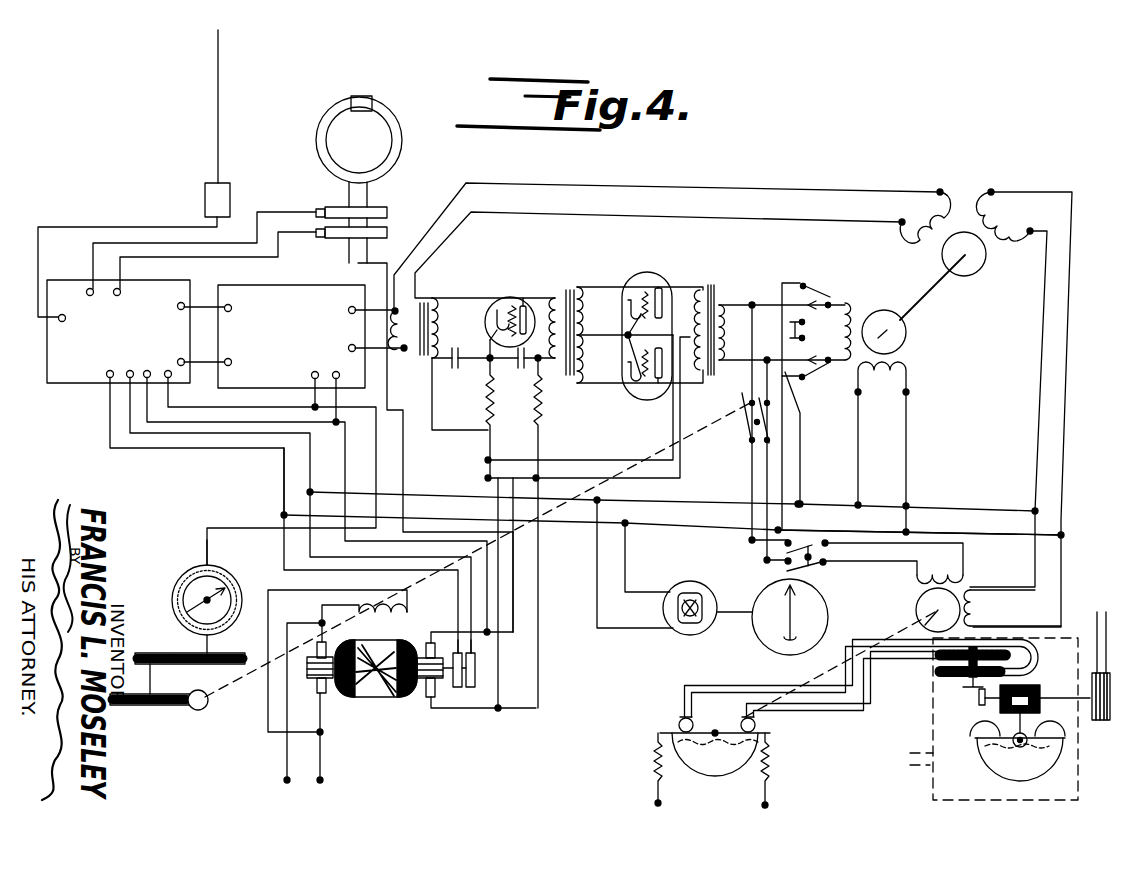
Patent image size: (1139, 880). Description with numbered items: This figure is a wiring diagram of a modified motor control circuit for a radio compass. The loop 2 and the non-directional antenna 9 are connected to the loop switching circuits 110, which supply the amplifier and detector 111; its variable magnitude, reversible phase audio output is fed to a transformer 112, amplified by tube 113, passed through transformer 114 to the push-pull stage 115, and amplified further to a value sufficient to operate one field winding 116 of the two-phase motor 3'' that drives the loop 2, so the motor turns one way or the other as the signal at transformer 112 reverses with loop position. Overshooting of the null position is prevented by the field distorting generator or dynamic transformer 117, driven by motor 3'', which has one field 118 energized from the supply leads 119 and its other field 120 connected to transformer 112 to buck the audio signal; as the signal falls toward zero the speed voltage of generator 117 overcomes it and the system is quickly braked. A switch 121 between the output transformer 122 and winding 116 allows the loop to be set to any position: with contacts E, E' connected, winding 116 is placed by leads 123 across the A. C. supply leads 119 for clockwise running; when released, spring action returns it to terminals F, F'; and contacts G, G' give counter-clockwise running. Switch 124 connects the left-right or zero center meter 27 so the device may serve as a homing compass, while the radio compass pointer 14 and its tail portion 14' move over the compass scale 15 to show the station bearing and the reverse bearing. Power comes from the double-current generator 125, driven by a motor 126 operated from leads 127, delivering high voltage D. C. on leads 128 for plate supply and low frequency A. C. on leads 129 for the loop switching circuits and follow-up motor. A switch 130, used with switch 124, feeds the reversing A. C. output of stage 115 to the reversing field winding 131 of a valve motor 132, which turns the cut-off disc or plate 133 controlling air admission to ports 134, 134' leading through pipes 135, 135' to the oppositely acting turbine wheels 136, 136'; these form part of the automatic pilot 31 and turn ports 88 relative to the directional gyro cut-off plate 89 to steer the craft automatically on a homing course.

The non-directional antenna 9 is at (222, 118).
The loop 2 is at (395, 116).
The loop switching circuits 110 is at (58, 280).
The amplifier and detector 111 is at (298, 290).
The transformer 112 is at (424, 316).
The tube 113 is at (510, 310).
The transformer 114 is at (571, 326).
The push-pull stage 115 is at (647, 326).
The output transformer 122 is at (719, 322).
The switch 121 is at (808, 276).
The contact E is at (813, 275).
The terminal F is at (834, 294).
The contact G is at (809, 322).
The contact E' is at (816, 336).
The terminal F' is at (838, 367).
The contact G' is at (815, 390).
The field winding 116 is at (884, 317).
The field distorting generator or dynamic transformer 117 is at (996, 304).
The two-phase motor 3'' is at (935, 348).
The field 120 is at (919, 217).
The field 118 is at (1010, 215).
The switch 124 is at (743, 434).
The leads 123 is at (782, 455).
The supply leads 119 is at (950, 528).
The leads 129 is at (309, 462).
The leads 128 is at (533, 612).
The compass scale 15 is at (180, 583).
The radio compass pointer 14 is at (222, 596).
The tail portion 14' is at (183, 609).
The double-current generator 125 is at (440, 726).
The motor 126 is at (326, 695).
The leads 127 is at (290, 754).
The left-right or zero center meter 27 is at (674, 567).
The switch 130 is at (823, 563).
The reversing field winding 131 is at (963, 568).
The valve motor 132 is at (919, 610).
The pipe 135 is at (862, 648).
The pipe 135' is at (844, 699).
The port 134 is at (660, 714).
The port 134' is at (782, 727).
The cut-off disc or plate 133 is at (712, 770).
The turbine wheel 136 is at (947, 666).
The turbine wheel 136' is at (1012, 666).
The ports 88 is at (983, 736).
The directional gyro cut-off plate 89 is at (990, 772).
The automatic pilot 31 is at (984, 726).